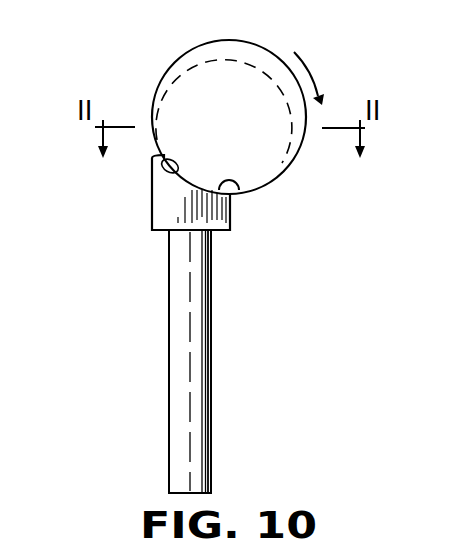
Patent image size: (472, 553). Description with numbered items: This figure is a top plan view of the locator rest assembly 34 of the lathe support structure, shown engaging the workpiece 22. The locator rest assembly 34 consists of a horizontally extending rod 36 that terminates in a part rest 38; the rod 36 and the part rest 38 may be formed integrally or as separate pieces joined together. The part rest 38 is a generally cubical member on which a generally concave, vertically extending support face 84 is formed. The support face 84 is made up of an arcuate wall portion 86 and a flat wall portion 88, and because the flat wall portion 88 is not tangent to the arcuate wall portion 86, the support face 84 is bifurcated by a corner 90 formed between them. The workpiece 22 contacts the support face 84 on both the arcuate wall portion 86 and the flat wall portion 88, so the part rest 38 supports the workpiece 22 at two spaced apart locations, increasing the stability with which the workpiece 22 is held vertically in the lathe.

The workpiece 22 is at (205, 46).
The locator rest assembly 34 is at (242, 278).
The horizontally extending rod 36 is at (203, 422).
The part rest 38 is at (166, 232).
The support face 84 is at (236, 190).
The arcuate wall portion 86 is at (183, 175).
The flat wall portion 88 is at (158, 158).
The corner 90 is at (183, 175).